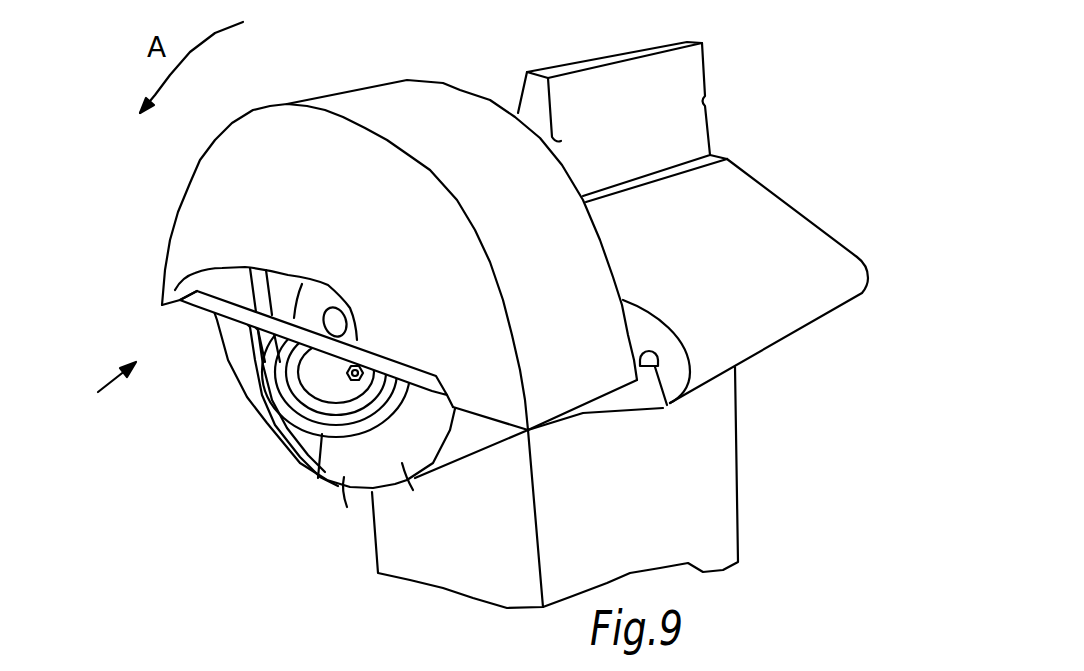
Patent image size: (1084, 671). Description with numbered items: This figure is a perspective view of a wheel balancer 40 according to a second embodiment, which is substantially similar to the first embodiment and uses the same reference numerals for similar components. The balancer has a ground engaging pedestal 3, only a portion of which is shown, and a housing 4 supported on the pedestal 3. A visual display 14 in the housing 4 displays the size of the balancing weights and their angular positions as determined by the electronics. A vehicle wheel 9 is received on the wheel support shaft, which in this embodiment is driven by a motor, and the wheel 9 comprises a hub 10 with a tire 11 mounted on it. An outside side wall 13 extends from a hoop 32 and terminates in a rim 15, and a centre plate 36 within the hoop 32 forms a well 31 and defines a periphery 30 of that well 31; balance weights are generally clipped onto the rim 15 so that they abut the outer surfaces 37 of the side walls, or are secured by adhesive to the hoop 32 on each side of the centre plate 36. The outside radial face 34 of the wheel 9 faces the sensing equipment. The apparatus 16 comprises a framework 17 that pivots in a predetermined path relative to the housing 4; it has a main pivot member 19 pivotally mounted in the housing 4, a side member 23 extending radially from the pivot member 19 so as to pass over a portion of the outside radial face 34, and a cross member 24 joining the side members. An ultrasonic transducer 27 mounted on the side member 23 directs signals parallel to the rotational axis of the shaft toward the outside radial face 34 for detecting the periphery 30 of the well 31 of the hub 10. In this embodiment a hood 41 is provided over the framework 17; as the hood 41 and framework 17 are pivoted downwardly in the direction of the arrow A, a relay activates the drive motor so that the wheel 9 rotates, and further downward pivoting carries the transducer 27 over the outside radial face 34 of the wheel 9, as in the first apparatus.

The ground engaging pedestal 3 is at (728, 528).
The housing 4 is at (750, 207).
The vehicle wheel 9 is at (283, 440).
The hub 10 is at (309, 372).
The tire 11 is at (372, 490).
The outside side wall 13 is at (278, 345).
The visual display 14 is at (530, 83).
The rim 15 is at (343, 479).
The apparatus 16 is at (97, 393).
The framework 17 is at (185, 305).
The main pivot member 19 is at (703, 380).
The side member 23 is at (237, 315).
The cross member 24 is at (290, 323).
The ultrasonic transducer 27 is at (348, 309).
The periphery of the well 30 is at (300, 392).
The well 31 is at (300, 375).
The hoop 32 is at (289, 306).
The outside radial face 34 is at (413, 491).
The centre plate 36 is at (368, 392).
The outer surface of side wall 37 is at (317, 412).
The wheel balancer 40 is at (647, 104).
The hood 41 is at (206, 157).